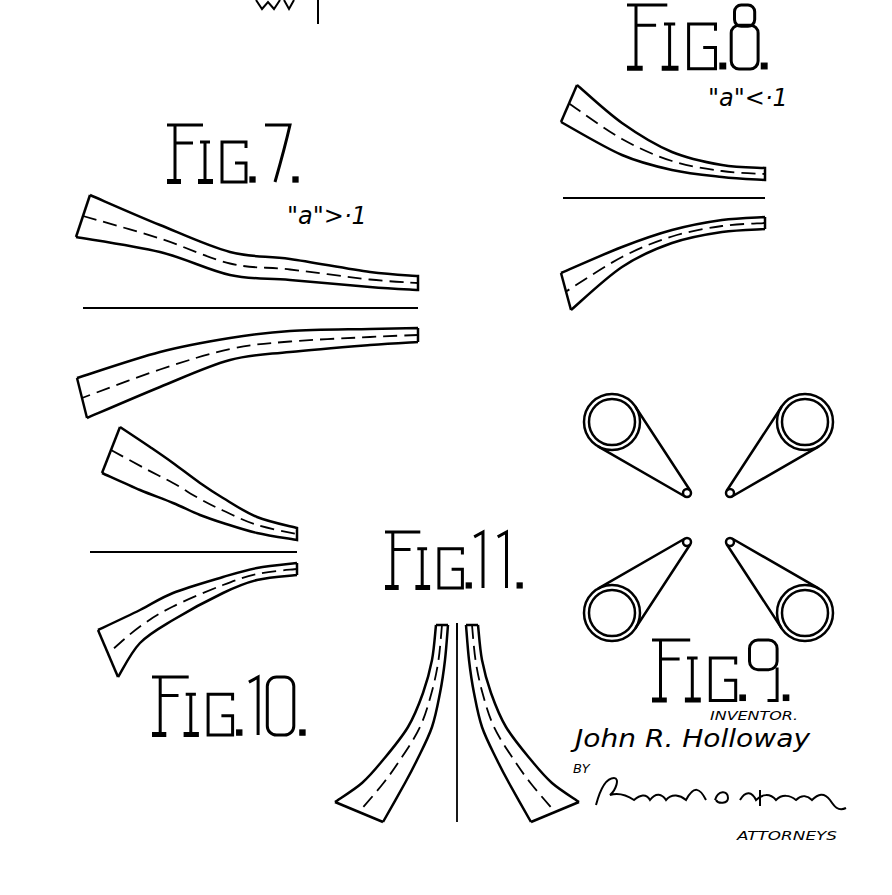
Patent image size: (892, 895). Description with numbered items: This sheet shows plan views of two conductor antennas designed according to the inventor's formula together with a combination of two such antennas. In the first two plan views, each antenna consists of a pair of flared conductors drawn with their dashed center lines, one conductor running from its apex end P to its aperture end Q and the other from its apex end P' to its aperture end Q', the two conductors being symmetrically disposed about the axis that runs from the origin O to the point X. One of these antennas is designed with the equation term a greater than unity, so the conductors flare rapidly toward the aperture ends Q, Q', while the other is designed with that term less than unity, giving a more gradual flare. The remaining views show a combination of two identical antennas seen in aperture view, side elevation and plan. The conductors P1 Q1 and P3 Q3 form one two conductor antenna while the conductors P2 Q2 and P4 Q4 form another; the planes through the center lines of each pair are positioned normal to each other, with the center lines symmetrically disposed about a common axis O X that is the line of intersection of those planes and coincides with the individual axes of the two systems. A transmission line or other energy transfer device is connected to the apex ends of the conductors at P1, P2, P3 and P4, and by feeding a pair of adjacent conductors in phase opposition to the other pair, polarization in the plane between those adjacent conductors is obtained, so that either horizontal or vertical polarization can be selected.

In FIG. 7, the apex end of conductor P is at (258, 246).
In FIG. 8, the apex end of conductor P is at (673, 136).
In FIG. 10, the apex end of conductor P is at (209, 485).
In FIG. 7, the aperture end of conductor Q is at (74, 216).
In FIG. 8, the aperture end of conductor Q is at (558, 103).
In FIG. 10, the aperture end of conductor Q is at (102, 450).
In FIG. 7, the origin of axis O is at (240, 308).
In FIG. 8, the origin of axis O is at (655, 198).
In FIG. 10, the origin of axis O is at (184, 552).
In FIG. 11, the origin of axis O is at (456, 733).
In FIG. 7, the axis end point X is at (420, 310).
In FIG. 8, the axis end point X is at (768, 199).
In FIG. 10, the axis end point X is at (300, 552).
In FIG. 11, the axis end point X is at (456, 625).
In FIG. 7, the apex end of second conductor P' is at (261, 369).
In FIG. 8, the apex end of second conductor P' is at (676, 261).
In FIG. 7, the aperture end of second conductor Q' is at (72, 398).
In FIG. 8, the aperture end of second conductor Q' is at (555, 292).
In FIG. 11, the apex end of first conductor P1 is at (394, 713).
In FIG. 9, the apex end of first conductor P1 is at (683, 494).
In FIG. 11, the apex end of second conductor P2 is at (522, 713).
In FIG. 9, the apex end of second conductor P2 is at (735, 494).
In FIG. 9, the apex end of third conductor P3 is at (736, 541).
In FIG. 10, the apex end of fourth conductor P4 is at (212, 619).
In FIG. 9, the apex end of fourth conductor P4 is at (683, 540).
In FIG. 11, the aperture end of first conductor Q1 is at (359, 820).
In FIG. 9, the aperture end of first conductor Q1 is at (615, 418).
In FIG. 11, the aperture end of second conductor Q2 is at (560, 820).
In FIG. 9, the aperture end of second conductor Q2 is at (801, 410).
In FIG. 9, the aperture end of third conductor Q3 is at (808, 602).
In FIG. 10, the aperture end of fourth conductor Q4 is at (99, 655).
In FIG. 9, the aperture end of fourth conductor Q4 is at (612, 602).